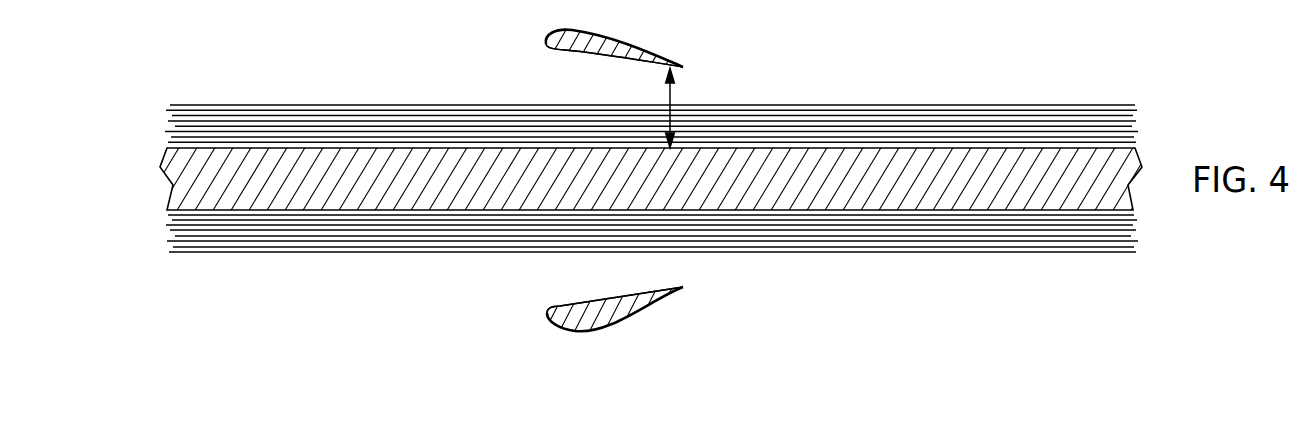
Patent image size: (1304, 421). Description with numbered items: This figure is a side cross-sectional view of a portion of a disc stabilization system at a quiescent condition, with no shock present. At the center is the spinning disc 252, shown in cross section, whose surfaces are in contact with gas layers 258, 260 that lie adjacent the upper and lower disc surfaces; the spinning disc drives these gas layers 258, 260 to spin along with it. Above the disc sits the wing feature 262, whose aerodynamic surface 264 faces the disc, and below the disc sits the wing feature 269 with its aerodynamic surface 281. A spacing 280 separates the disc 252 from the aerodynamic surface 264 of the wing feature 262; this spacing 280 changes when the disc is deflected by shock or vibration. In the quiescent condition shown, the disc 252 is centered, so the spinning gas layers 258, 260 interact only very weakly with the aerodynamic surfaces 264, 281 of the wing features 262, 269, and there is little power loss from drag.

The spinning disc 252 is at (334, 190).
The gas layer 258 is at (317, 127).
The gas layer 260 is at (327, 240).
The wing feature 262 is at (623, 47).
The aerodynamic surface 264 is at (643, 64).
The spacing 280 is at (673, 102).
The wing feature 269 is at (597, 320).
The aerodynamic surface 281 is at (597, 298).